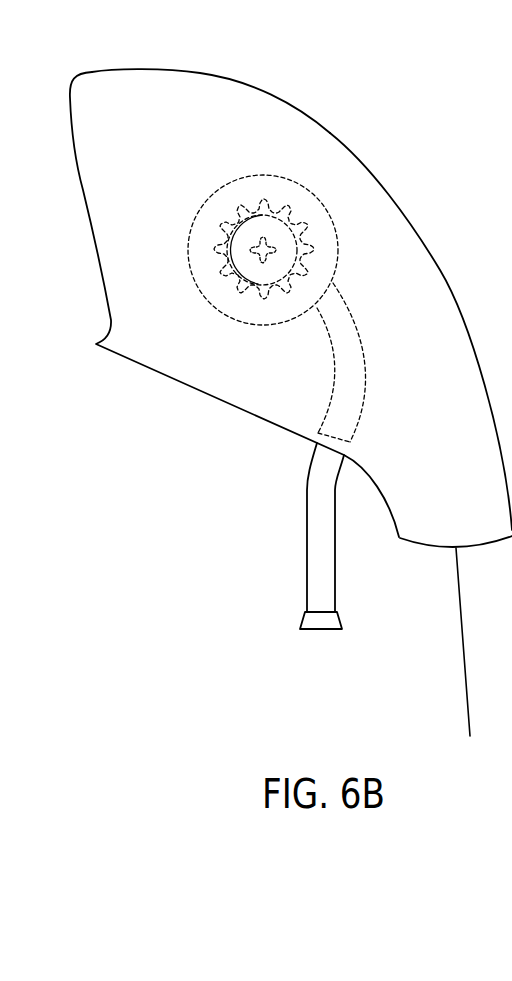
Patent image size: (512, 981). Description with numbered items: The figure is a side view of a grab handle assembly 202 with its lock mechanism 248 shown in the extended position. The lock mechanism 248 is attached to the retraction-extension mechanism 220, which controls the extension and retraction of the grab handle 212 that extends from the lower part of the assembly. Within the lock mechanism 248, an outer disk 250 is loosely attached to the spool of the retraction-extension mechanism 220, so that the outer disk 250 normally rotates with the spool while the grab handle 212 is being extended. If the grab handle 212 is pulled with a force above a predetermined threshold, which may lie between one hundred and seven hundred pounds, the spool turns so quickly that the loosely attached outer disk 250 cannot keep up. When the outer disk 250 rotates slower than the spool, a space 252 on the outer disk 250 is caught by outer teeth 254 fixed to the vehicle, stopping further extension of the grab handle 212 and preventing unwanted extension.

The grab handle assembly 202 is at (375, 105).
The lock mechanism 248 is at (261, 140).
The retraction-extension mechanism 220 is at (165, 243).
The outer teeth 254 is at (226, 222).
The outer disk 250 is at (285, 250).
The space 252 is at (268, 278).
The grab handle 212 is at (300, 621).